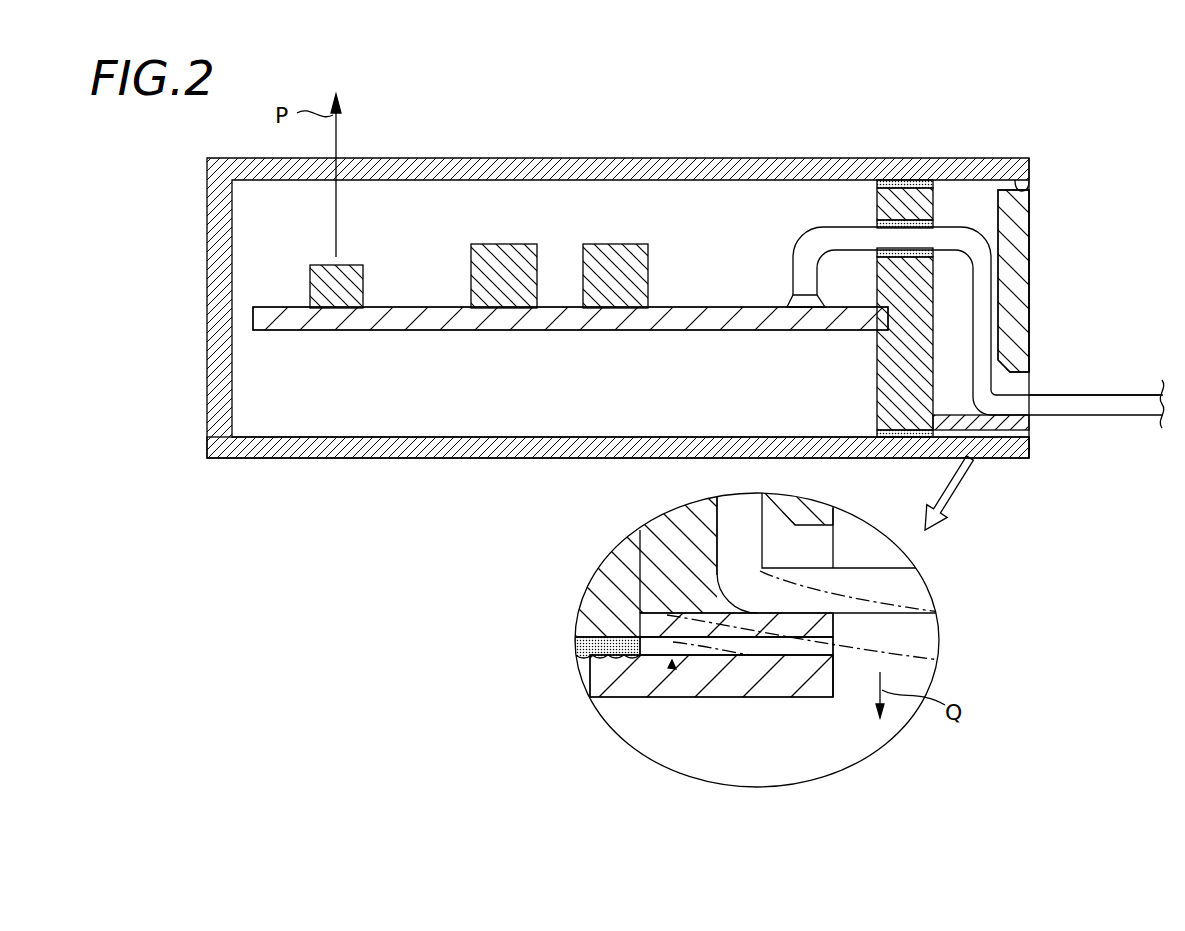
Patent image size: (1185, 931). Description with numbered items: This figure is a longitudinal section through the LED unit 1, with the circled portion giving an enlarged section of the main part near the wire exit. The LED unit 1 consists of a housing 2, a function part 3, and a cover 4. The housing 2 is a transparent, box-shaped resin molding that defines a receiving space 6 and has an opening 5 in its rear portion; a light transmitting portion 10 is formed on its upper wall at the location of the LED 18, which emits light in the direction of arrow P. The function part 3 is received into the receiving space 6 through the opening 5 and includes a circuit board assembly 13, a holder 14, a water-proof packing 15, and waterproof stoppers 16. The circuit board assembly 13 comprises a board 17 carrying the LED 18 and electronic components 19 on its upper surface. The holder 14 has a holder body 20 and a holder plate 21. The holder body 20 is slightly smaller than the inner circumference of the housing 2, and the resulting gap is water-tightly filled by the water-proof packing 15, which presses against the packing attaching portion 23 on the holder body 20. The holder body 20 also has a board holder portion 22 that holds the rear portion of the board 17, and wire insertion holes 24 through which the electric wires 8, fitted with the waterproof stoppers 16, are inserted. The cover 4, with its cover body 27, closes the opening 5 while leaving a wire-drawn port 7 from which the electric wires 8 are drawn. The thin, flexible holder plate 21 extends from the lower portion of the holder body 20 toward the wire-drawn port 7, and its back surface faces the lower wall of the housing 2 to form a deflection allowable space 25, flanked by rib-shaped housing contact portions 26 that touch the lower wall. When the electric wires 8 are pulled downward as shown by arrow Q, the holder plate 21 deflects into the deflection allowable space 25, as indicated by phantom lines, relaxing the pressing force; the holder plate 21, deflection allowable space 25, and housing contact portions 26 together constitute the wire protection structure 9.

The LED unit 1 is at (642, 150).
The housing 2 is at (572, 158).
The function part 3 is at (751, 205).
The cover 4 is at (1022, 222).
The opening 5 is at (1024, 186).
The receiving space 6 is at (406, 416).
The wire-drawn port 7 is at (1020, 383).
The electric wires 8 is at (1118, 413).
The wire protection structure 9 is at (671, 665).
The light transmitting portion 10 is at (338, 160).
The circuit board assembly 13 is at (600, 331).
The holder 14 is at (877, 368).
The water-proof packing 15 is at (902, 178).
The waterproof stoppers 16 is at (877, 198).
The board 17 is at (403, 323).
The LED 18 is at (340, 284).
The electronic components 19 is at (530, 245).
The holder body 20 is at (925, 330).
The holder plate 21 is at (952, 420).
The board holder portion 22 is at (873, 318).
The packing attaching portion 23 is at (593, 658).
The wire insertion holes 24 is at (925, 235).
The deflection allowable space 25 is at (1000, 431).
The housing contact portions 26 is at (683, 648).
The cover body 27 is at (1022, 276).